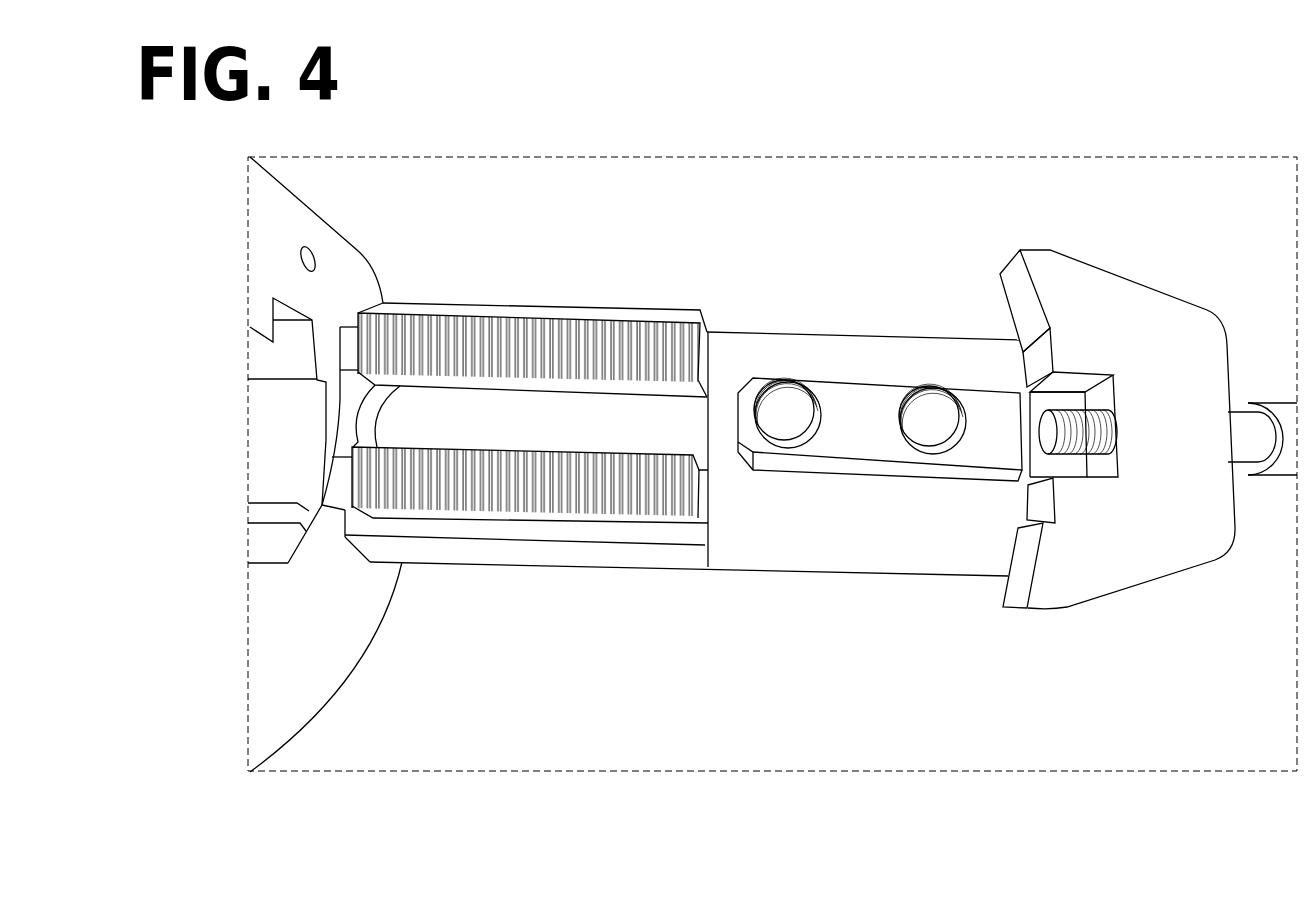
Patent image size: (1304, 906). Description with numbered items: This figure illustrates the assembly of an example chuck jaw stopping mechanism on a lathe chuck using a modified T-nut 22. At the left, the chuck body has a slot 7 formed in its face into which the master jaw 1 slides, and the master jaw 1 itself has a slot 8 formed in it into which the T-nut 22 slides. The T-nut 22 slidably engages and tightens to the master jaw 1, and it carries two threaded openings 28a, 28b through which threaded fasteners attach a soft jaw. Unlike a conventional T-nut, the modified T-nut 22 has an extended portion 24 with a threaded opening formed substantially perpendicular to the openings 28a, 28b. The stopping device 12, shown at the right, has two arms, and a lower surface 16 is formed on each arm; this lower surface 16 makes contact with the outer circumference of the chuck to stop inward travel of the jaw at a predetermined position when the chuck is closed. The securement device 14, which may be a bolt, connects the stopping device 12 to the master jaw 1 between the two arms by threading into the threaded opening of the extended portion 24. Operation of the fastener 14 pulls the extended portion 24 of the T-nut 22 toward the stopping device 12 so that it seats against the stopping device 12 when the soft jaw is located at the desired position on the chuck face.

The master jaw 1 is at (532, 297).
The slot 7 is at (297, 329).
The slot 8 is at (698, 413).
The stopping device 12 is at (1052, 414).
The securement device 14 is at (1262, 403).
The lower surface 16 is at (1004, 290).
The T-nut 22 is at (868, 409).
The extended portion 24 is at (990, 470).
The opening 28a is at (925, 449).
The opening 28b is at (795, 448).